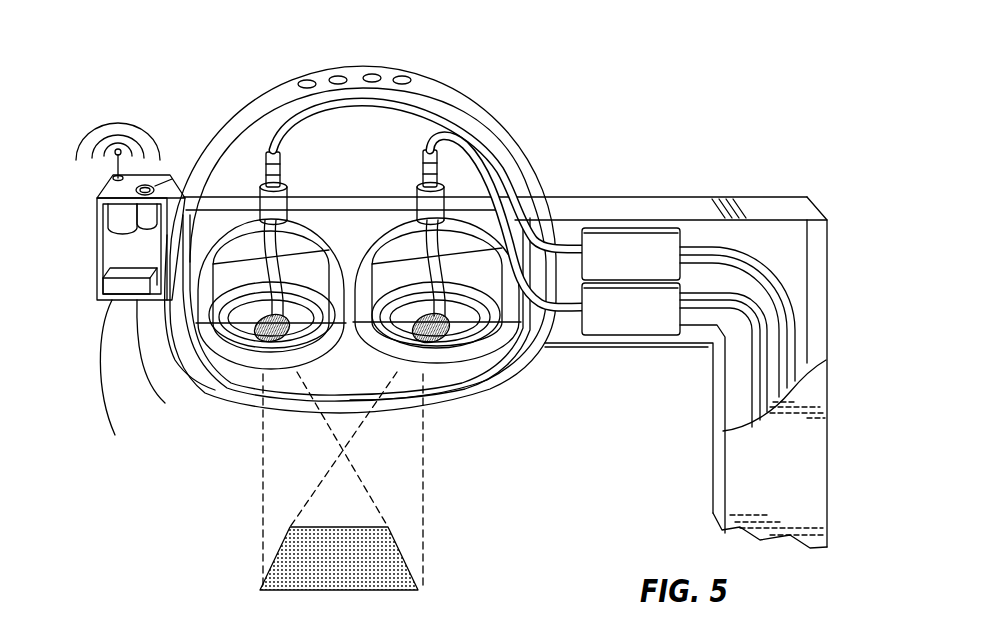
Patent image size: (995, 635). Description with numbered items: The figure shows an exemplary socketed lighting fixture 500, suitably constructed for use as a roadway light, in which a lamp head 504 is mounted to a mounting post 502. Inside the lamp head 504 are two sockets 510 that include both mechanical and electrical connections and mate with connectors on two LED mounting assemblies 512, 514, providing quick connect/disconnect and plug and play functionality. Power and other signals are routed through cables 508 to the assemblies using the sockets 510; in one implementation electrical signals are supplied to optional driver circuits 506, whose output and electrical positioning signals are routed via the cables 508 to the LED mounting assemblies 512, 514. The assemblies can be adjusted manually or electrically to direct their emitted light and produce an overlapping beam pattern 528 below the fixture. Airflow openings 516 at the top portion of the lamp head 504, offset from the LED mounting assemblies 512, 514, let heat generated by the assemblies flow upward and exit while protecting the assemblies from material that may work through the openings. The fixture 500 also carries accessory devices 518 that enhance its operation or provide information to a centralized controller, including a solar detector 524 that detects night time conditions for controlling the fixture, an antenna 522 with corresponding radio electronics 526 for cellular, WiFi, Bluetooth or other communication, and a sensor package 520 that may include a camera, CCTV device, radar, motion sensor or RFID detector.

The socketed lighting fixture 500 is at (688, 99).
The mounting post 502 is at (760, 468).
The lamp head 504 is at (477, 104).
The driver circuits 506 is at (627, 338).
The cables 508 is at (272, 152).
The sockets 510 is at (265, 214).
The LED mounting assembly 512 is at (253, 362).
The LED mounting assembly 514 is at (457, 370).
The airflow openings 516 is at (338, 77).
The accessory devices 518 is at (171, 361).
The sensor package 520 is at (129, 378).
The antenna 522 is at (117, 167).
The solar detector 524 is at (176, 174).
The radio electronics 526 is at (100, 237).
The beam pattern 528 is at (302, 556).